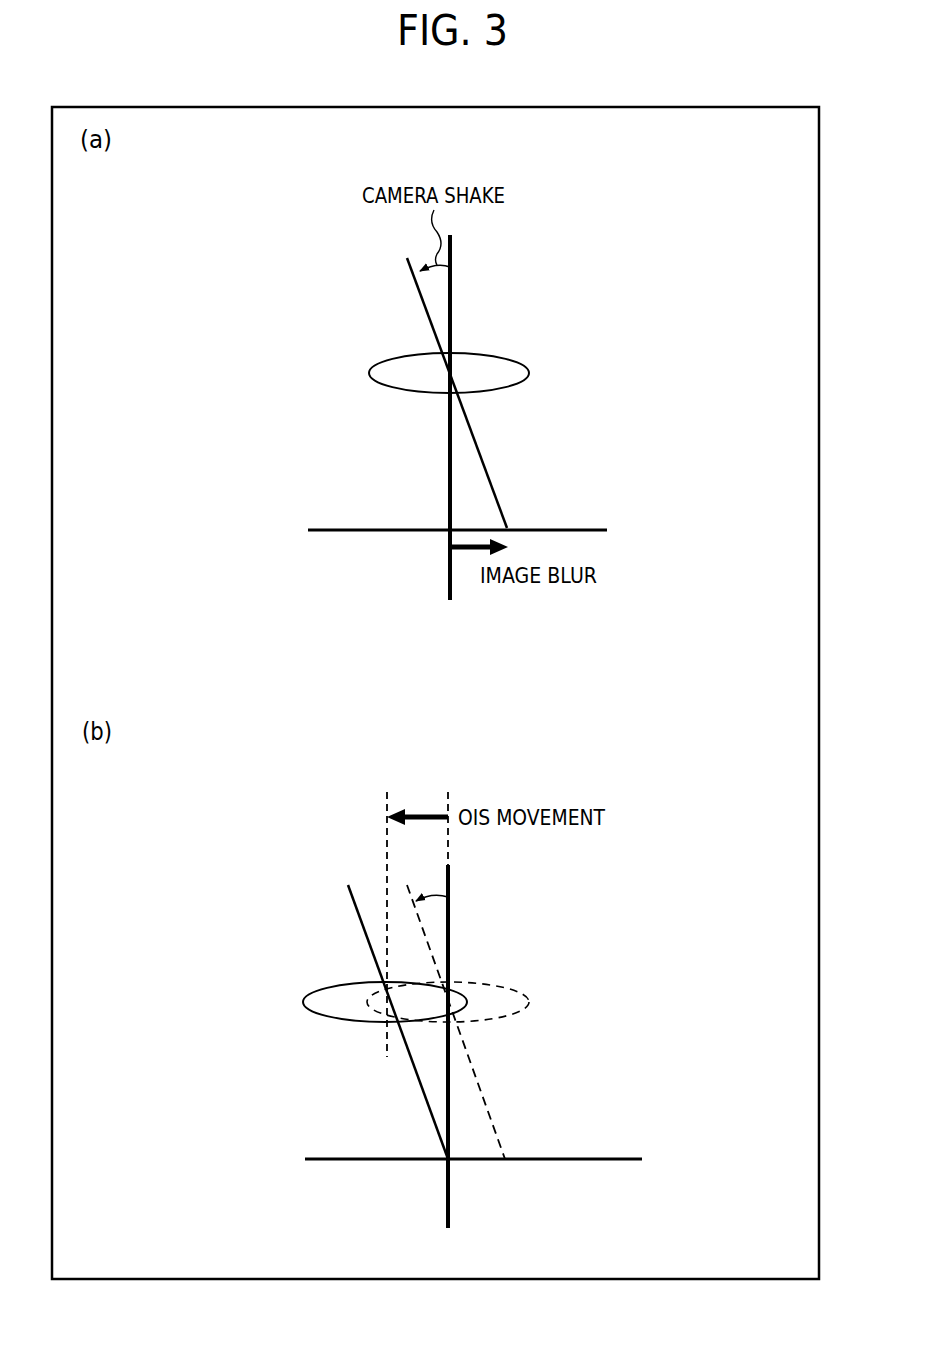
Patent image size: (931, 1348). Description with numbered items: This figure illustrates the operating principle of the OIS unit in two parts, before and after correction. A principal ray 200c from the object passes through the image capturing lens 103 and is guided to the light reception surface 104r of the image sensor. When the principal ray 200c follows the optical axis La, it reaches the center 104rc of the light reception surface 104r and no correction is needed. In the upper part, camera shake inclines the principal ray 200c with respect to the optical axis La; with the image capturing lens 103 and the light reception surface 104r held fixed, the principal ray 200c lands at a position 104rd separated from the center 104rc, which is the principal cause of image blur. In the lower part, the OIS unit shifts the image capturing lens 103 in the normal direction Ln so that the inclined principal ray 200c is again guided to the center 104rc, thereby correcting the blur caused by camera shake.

The image capturing lens 103 is at (303, 1001).
The principal ray 200c is at (420, 296).
The optical axis La is at (447, 387).
The normal direction Ln is at (420, 812).
The light reception surface 104r is at (599, 528).
The center of the light reception surface 104rc is at (448, 542).
The position separated from the center 104rd is at (527, 507).